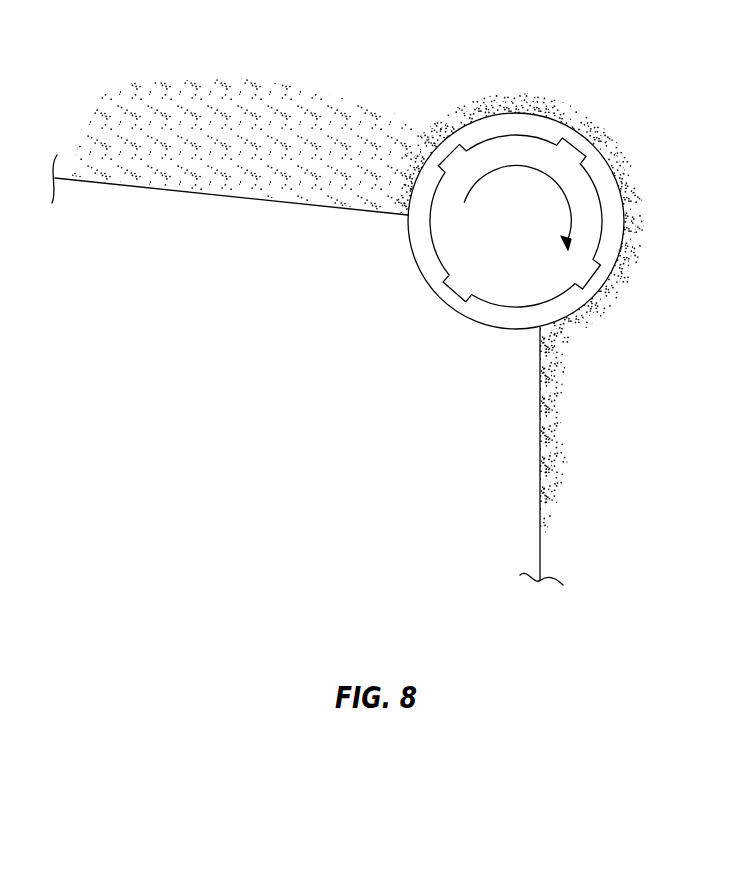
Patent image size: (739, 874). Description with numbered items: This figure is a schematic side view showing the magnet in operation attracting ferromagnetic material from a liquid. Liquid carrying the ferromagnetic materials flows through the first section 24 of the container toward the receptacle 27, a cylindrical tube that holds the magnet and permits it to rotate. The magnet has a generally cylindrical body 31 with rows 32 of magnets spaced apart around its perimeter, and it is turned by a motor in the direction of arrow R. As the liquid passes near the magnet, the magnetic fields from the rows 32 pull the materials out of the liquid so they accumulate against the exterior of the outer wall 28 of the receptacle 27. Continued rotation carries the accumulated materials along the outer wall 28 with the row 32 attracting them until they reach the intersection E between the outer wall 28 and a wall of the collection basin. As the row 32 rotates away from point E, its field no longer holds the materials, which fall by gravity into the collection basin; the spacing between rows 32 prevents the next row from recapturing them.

The first section 24 is at (173, 192).
The receptacle 27 is at (409, 240).
The outer wall 28 is at (522, 112).
The body 31 is at (465, 236).
The rows of magnets 32 is at (577, 148).
The arrow R is at (535, 168).
The intersection E is at (547, 330).